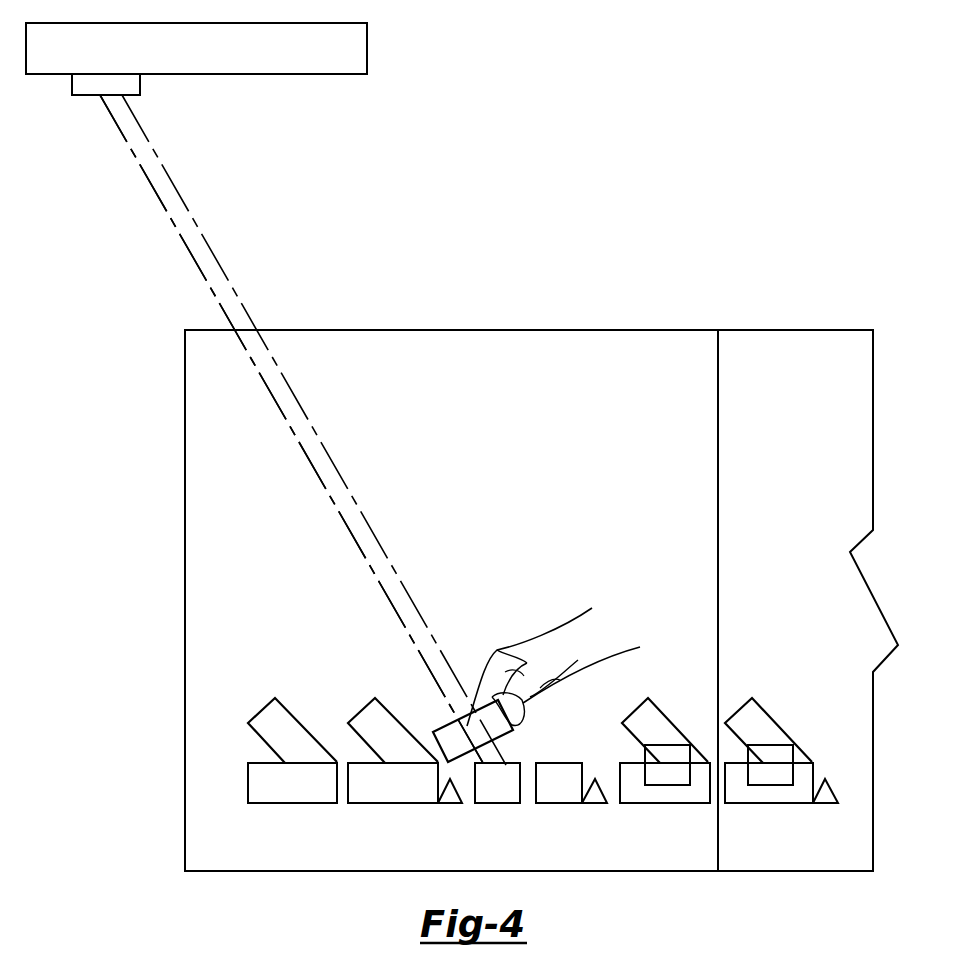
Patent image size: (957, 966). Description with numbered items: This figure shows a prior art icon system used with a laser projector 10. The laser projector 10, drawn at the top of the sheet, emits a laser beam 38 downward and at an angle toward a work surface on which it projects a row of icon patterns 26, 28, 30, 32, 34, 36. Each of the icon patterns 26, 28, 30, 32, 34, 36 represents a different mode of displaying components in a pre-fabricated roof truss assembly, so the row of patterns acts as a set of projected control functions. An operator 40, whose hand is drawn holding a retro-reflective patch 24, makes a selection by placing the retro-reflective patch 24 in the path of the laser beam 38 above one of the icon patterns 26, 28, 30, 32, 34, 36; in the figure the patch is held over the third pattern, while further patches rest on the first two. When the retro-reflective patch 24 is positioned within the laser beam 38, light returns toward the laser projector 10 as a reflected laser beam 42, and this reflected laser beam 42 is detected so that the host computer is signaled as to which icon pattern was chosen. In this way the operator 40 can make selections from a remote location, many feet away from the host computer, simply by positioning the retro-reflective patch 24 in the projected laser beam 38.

The laser projector 10 is at (367, 48).
The retro-reflective patch 24 is at (362, 707).
The icon pattern 26 is at (302, 797).
The icon pattern 28 is at (402, 797).
The icon pattern 30 is at (509, 797).
The icon pattern 32 is at (570, 797).
The icon pattern 34 is at (663, 805).
The icon pattern 36 is at (767, 805).
The laser beam 38 is at (187, 208).
The operator 40 is at (597, 632).
The reflected laser beam 42 is at (175, 228).